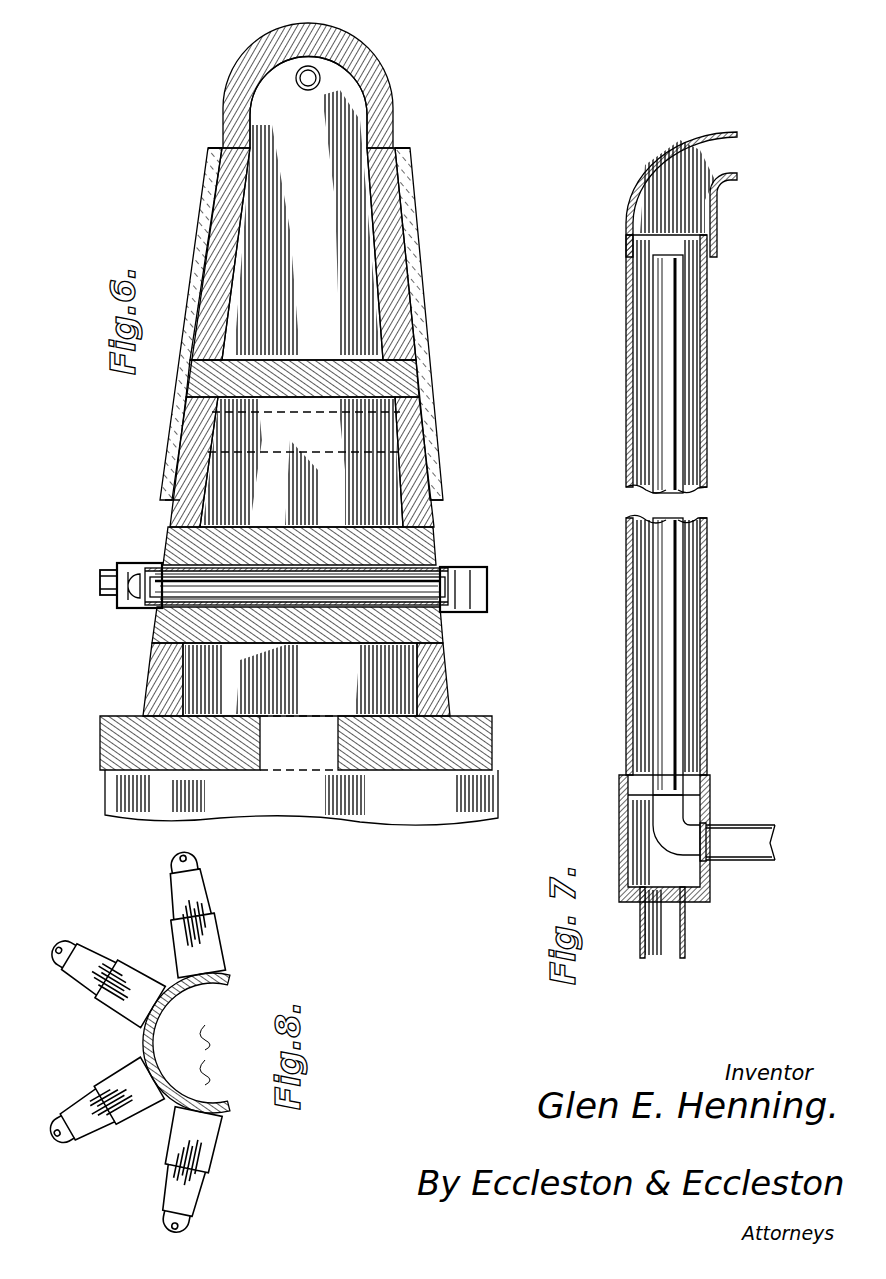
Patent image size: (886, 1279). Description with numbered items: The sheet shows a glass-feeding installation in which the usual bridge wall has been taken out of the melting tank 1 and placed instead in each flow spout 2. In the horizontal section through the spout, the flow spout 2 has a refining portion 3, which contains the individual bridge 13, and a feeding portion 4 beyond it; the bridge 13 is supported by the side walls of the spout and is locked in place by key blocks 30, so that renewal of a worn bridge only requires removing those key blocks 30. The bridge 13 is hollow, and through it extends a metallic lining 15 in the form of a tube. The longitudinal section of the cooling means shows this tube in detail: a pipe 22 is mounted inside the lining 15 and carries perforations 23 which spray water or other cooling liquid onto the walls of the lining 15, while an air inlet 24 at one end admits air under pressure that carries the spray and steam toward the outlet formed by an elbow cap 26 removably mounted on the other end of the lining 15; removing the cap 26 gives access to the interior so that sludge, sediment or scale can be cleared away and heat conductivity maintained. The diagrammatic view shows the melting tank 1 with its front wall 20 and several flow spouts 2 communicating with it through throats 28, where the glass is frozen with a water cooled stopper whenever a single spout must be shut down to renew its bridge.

In FIG. 6, the melting tank 1 is at (420, 812).
In FIG. 6, the flow spout 2 is at (220, 292).
In FIG. 8, the flow spout 2 is at (95, 960).
In FIG. 6, the refining portion 3 is at (300, 679).
In FIG. 6, the feeding portion 4 is at (302, 209).
In FIG. 6, the individual bridge 13 is at (425, 540).
In FIG. 6, the metallic lining 15 is at (445, 568).
In FIG. 7, the metallic lining 15 is at (626, 620).
In FIG. 6, the front wall 20 is at (470, 745).
In FIG. 8, the front wall 20 is at (225, 1107).
In FIG. 6, the pipe 22 is at (160, 575).
In FIG. 7, the pipe 22 is at (680, 618).
In FIG. 6, the perforations 23 is at (415, 600).
In FIG. 7, the perforations 23 is at (667, 373).
In FIG. 6, the air inlet 24 is at (112, 565).
In FIG. 7, the air inlet 24 is at (680, 893).
In FIG. 6, the elbow cap 26 is at (300, 560).
In FIG. 7, the elbow cap 26 is at (653, 165).
In FIG. 6, the throat 28 is at (295, 743).
In FIG. 8, the throat 28 is at (205, 1072).
In FIG. 6, the key blocks 30 is at (170, 500).